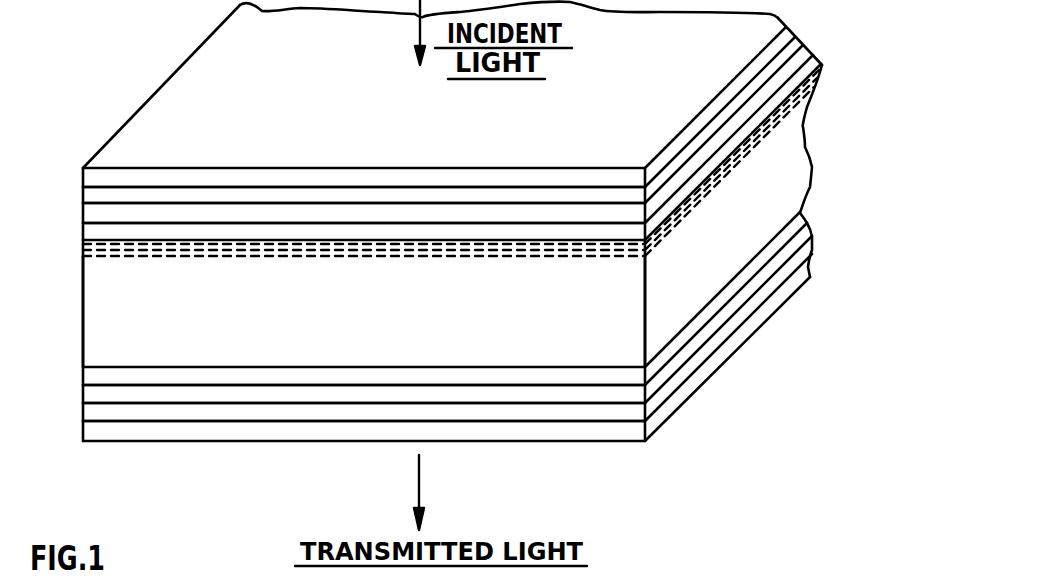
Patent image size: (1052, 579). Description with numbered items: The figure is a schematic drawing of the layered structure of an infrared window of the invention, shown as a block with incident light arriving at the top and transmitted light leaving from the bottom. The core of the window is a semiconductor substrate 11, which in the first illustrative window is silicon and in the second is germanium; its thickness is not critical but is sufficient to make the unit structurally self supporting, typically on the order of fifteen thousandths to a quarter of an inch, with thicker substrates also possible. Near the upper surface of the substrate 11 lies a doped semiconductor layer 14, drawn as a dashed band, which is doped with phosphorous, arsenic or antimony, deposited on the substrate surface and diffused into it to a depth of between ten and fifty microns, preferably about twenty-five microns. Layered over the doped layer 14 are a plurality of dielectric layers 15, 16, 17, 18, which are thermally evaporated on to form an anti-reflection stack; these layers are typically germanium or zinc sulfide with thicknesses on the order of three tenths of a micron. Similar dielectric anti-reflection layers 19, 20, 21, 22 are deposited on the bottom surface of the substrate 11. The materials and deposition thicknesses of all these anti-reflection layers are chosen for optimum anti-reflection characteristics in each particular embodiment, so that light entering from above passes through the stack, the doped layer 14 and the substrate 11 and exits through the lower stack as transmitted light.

The semiconductor substrate 11 is at (130, 293).
The doped semiconductor layer 14 is at (595, 257).
The dielectric layer 15 is at (267, 228).
The dielectric layer 16 is at (228, 210).
The dielectric layer 17 is at (203, 193).
The dielectric layer 18 is at (175, 167).
The dielectric anti-reflection layer 19 is at (90, 372).
The dielectric anti-reflection layer 20 is at (116, 393).
The dielectric anti-reflection layer 21 is at (162, 412).
The dielectric anti-reflection layer 22 is at (193, 428).